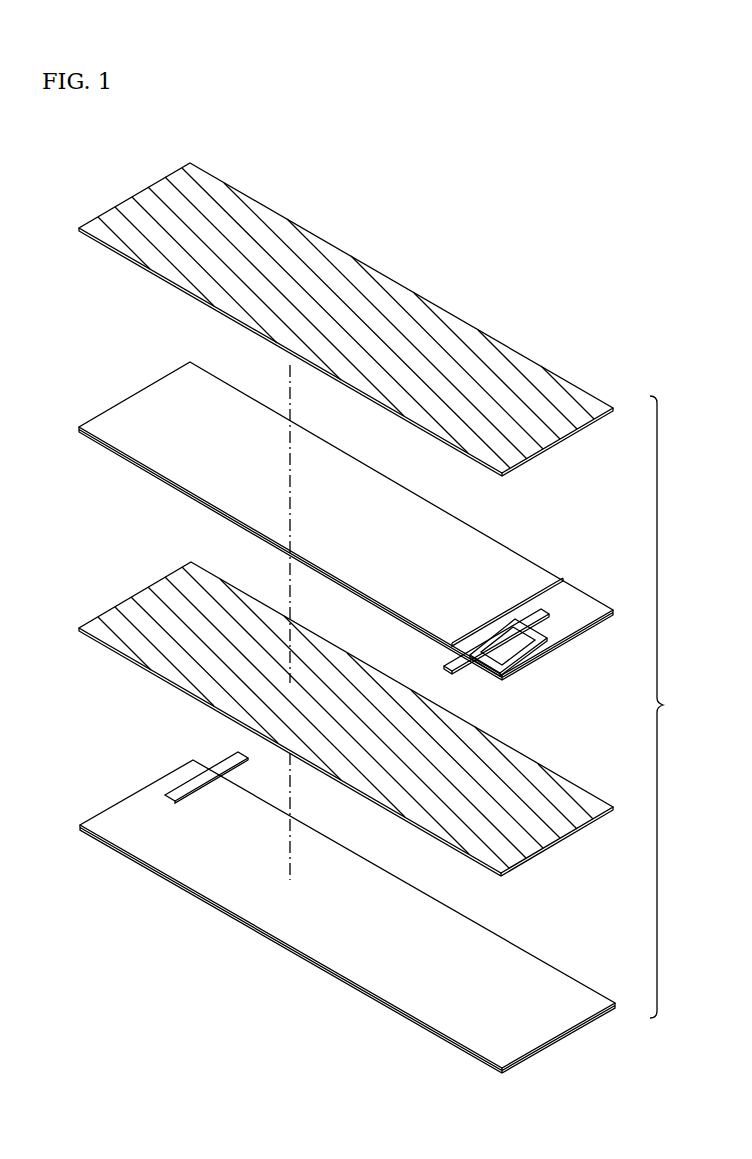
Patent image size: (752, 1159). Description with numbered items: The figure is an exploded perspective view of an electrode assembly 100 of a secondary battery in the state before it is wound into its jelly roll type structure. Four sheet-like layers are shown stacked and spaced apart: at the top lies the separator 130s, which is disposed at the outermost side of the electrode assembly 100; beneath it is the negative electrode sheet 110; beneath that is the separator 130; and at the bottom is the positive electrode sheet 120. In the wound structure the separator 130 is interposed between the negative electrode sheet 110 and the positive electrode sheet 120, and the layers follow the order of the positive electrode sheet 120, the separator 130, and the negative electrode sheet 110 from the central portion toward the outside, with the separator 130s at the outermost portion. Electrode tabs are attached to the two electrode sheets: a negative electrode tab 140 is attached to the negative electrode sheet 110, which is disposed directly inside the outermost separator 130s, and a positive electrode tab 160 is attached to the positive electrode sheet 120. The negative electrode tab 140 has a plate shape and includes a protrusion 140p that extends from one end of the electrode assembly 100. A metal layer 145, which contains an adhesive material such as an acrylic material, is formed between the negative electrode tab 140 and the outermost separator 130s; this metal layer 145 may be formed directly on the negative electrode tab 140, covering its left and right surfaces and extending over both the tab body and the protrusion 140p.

The electrode assembly 100 is at (676, 707).
The negative electrode sheet 110 is at (537, 538).
The positive electrode sheet 120 is at (347, 890).
The separator 130 is at (594, 800).
The separator 130s is at (593, 404).
The negative electrode tab 140 is at (533, 661).
The metal layer 145 is at (546, 638).
The protrusion 140p is at (448, 672).
The positive electrode tab 160 is at (227, 758).